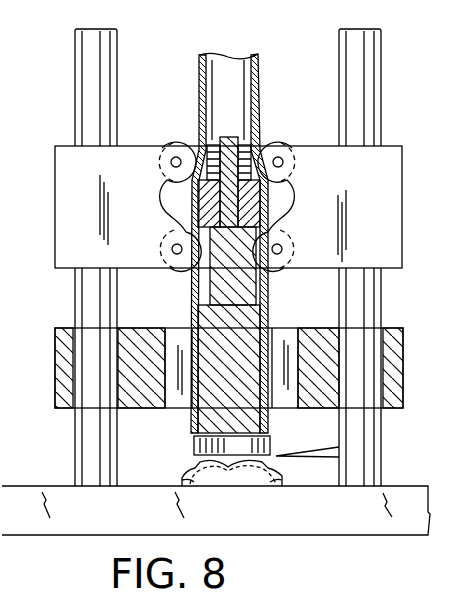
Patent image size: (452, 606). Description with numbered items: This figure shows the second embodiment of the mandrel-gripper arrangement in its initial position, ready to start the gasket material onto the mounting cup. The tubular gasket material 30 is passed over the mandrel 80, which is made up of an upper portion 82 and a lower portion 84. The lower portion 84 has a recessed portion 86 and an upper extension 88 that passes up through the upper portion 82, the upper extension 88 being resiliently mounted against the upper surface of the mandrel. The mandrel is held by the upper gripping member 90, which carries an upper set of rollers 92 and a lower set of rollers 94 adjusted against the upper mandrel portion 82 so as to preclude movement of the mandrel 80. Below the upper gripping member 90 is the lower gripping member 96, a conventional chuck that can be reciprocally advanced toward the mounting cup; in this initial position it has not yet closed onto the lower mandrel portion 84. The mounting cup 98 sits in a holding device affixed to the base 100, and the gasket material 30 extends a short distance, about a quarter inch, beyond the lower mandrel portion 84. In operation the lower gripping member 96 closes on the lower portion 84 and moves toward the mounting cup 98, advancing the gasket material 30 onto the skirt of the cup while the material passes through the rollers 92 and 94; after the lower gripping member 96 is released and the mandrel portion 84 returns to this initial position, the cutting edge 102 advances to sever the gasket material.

The gasket material 30 is at (258, 104).
The mandrel 80 is at (165, 192).
The upper portion 82 is at (262, 198).
The lower portion 84 is at (222, 410).
The recessed portion 86 is at (223, 288).
The upper extension 88 is at (197, 208).
The upper gripping member 90 is at (43, 183).
The upper set of rollers 92 is at (183, 113).
The lower set of rollers 94 is at (177, 272).
The lower gripping member 96 is at (403, 376).
The mounting cup 98 is at (282, 474).
The base 100 is at (366, 522).
The cutting edge 102 is at (339, 447).